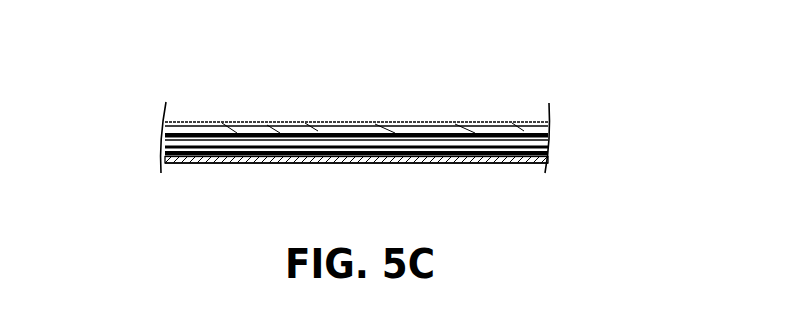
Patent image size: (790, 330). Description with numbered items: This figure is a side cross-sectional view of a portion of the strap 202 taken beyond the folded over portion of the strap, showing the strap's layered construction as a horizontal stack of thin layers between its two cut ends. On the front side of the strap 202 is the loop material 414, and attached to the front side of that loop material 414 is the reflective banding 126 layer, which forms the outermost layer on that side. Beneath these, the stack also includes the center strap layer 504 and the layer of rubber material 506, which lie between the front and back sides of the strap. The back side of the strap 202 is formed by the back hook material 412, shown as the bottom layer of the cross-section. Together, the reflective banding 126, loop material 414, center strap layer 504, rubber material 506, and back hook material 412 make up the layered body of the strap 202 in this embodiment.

The strap 202 is at (355, 131).
The reflective banding 126 is at (476, 123).
The layer of rubber material 506 is at (261, 121).
The center strap layer 504 is at (318, 133).
The loop material 414 is at (412, 132).
The back hook material 412 is at (302, 160).